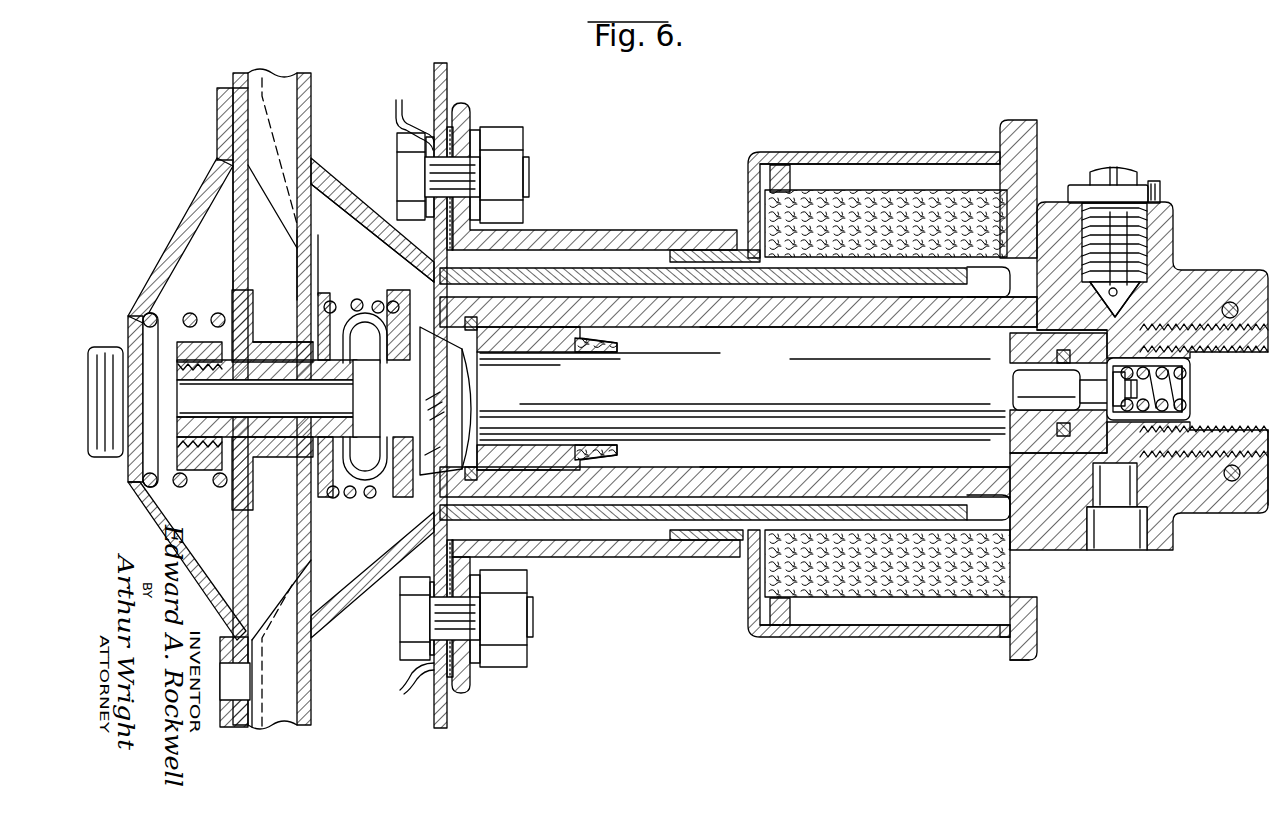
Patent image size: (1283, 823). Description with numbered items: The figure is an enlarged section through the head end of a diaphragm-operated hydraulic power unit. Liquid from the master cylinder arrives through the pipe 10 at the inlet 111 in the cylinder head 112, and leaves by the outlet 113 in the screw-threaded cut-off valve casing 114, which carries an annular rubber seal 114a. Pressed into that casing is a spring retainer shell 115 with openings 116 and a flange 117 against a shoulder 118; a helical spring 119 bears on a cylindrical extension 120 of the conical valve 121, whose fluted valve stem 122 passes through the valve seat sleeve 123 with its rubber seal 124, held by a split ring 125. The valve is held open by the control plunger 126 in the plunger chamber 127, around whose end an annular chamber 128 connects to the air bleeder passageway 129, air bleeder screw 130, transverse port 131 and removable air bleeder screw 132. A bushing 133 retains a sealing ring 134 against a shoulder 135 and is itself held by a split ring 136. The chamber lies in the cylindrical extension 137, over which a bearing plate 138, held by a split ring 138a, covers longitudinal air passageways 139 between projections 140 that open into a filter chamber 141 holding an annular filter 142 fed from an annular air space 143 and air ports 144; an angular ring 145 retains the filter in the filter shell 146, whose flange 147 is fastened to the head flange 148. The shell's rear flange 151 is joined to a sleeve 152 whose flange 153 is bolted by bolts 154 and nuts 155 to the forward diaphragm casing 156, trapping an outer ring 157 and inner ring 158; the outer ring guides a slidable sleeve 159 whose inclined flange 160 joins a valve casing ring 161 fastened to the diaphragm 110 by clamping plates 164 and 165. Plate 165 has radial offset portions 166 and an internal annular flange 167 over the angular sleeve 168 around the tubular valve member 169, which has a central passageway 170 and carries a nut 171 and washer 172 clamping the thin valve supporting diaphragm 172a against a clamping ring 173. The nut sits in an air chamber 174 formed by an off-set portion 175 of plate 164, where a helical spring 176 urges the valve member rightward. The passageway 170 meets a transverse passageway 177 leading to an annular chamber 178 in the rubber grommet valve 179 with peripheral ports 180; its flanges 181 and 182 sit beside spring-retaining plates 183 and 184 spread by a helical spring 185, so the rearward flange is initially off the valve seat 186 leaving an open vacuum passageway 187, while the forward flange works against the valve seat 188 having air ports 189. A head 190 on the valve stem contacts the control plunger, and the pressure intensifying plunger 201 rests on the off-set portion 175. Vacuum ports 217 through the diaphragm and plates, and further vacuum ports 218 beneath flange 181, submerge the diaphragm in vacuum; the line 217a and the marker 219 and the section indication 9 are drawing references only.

The diaphragm 110 is at (240, 95).
The inlet 111 is at (1122, 540).
The cylinder head 112 is at (1210, 283).
The outlet 113 is at (1253, 350).
The cut-off valve casing 114 is at (1257, 487).
The annular rubber seal 114a is at (1233, 480).
The spring retainer shell 115 is at (1185, 385).
The openings 116 is at (1187, 408).
The flange 117 is at (1066, 360).
The shoulder 118 is at (1115, 358).
The helical spring 119 is at (1162, 362).
The cylindrical extension 120 is at (1153, 417).
The conical valve 121 is at (1100, 420).
The fluted valve stem 122 is at (1017, 380).
The valve seat sleeve 123 is at (1010, 420).
The annular rubber seal 124 is at (1070, 432).
The split ring 125 is at (1033, 355).
The control plunger 126 is at (862, 349).
The plunger chamber 127 is at (957, 333).
The annular chamber 128 is at (1070, 330).
The air bleeder passageway 129 is at (1083, 307).
The air bleeder screw 130 is at (1147, 188).
The transverse port 131 is at (1120, 291).
The removable air bleeder screw 132 is at (1127, 168).
The bushing 133 is at (517, 333).
The sealing ring 134 is at (592, 347).
The shoulder 135 is at (596, 330).
The split ring 136 is at (465, 323).
The cylindrical extension 137 is at (787, 312).
The bearing plate 138 is at (627, 500).
The split ring 138a is at (466, 481).
The longitudinal air passageways 139 is at (688, 290).
The projections 140 is at (953, 497).
The filter chamber 141 is at (997, 510).
The annular filter 142 is at (818, 200).
The annular air space 143 is at (922, 170).
The air ports 144 is at (1027, 612).
The angular ring 145 is at (748, 175).
The filter shell 146 is at (817, 156).
The flange 147 is at (1000, 650).
The flange 148 is at (1027, 653).
The flange 151 is at (708, 230).
The sleeve 152 is at (602, 547).
The flange 153 is at (467, 675).
The bolts 154 is at (400, 622).
The nuts 155 is at (523, 653).
The forward diaphragm casing 156 is at (448, 717).
The outer ring 157 is at (503, 540).
The inner ring 158 is at (408, 680).
The slidable sleeve 159 is at (612, 272).
The inclined flange 160 is at (396, 236).
The valve casing ring 161 is at (334, 190).
The diaphragm clamping plate 164 is at (217, 125).
The diaphragm clamping plate 165 is at (310, 92).
The radial offset portions 166 is at (273, 75).
The internal annular flange 167 is at (280, 342).
The angular sleeve 168 is at (262, 308).
The tubular valve member 169 is at (288, 425).
The longitudinal central passageway 170 is at (195, 406).
The nut 171 is at (190, 346).
The washer 172 is at (228, 383).
The valve supporting diaphragm 172a is at (240, 254).
The clamping ring 173 is at (232, 298).
The air chamber 174 is at (196, 252).
The off-set portion 175 is at (146, 513).
The helical spring 176 is at (195, 483).
The transverse passageway 177 is at (362, 384).
The annular chamber 178 is at (363, 440).
The rubber grommet valve 179 is at (445, 412).
The peripheral ports 180 is at (353, 493).
The rearward flange 181 is at (326, 300).
The forward flange 182 is at (412, 293).
The spring-retaining plate 183 is at (330, 508).
The spring-retaining plate 184 is at (397, 505).
The helical spring 185 is at (358, 305).
The valve seat 186 is at (297, 284).
The vacuum passageway 187 is at (317, 284).
The valve seat 188 is at (419, 346).
The air ports 189 is at (374, 570).
The head 190 is at (456, 408).
The pressure intensifying plunger 201 is at (105, 360).
The vacuum ports 217 is at (237, 687).
The pipe centerline 217a is at (287, 707).
The vacuum ports 218 is at (303, 480).
The plate lower part 219 is at (460, 460).
The section line 9 is at (217, 680).
The pipe 10 is at (988, 226).